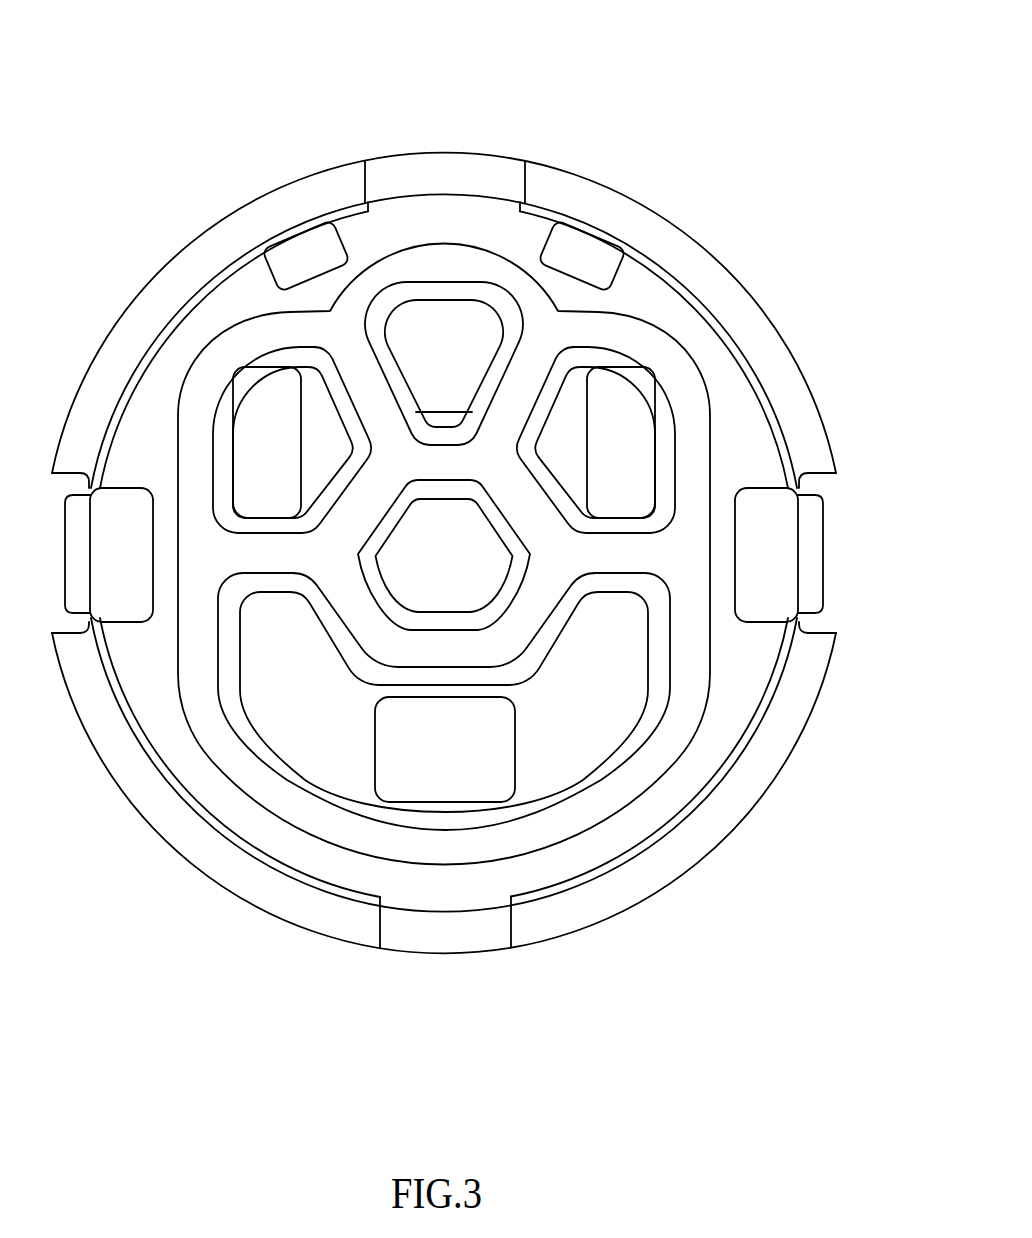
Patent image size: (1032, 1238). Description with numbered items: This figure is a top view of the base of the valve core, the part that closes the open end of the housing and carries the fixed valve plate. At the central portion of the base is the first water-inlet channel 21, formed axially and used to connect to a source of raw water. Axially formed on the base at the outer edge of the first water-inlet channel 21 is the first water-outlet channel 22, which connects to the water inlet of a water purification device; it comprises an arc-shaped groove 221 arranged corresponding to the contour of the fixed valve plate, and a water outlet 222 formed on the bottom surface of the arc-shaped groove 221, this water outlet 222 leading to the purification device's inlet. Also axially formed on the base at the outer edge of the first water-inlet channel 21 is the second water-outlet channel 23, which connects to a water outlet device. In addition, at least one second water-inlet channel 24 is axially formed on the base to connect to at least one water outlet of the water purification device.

The first water-inlet channel 21 is at (445, 555).
The first water-outlet channel 22 is at (555, 718).
The arc-shaped groove 221 is at (593, 677).
The water outlet 222 is at (463, 770).
The second water-outlet channel 23 is at (445, 340).
The second water-inlet channel 24 is at (258, 437).